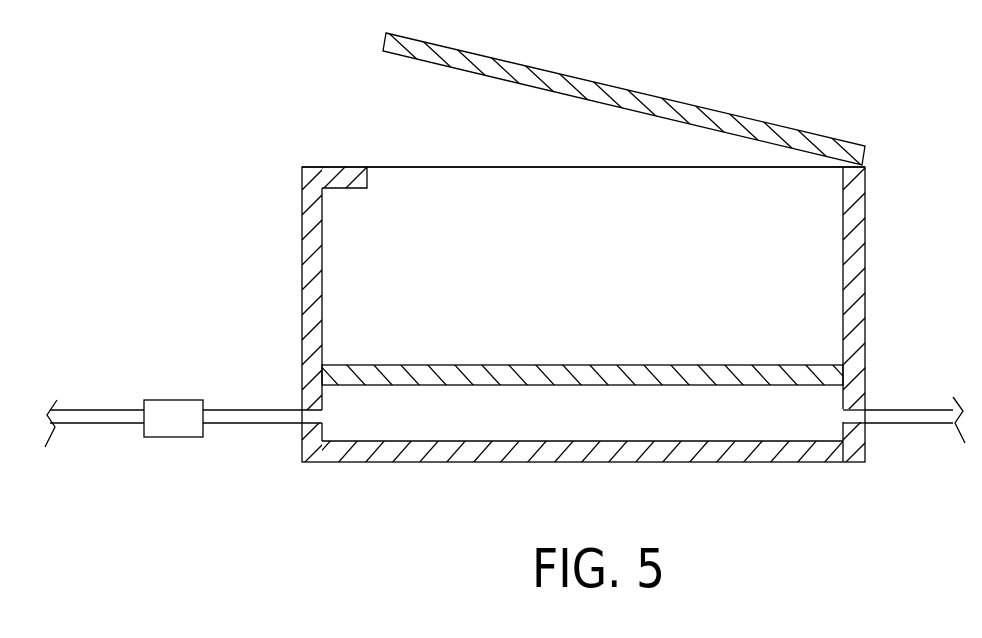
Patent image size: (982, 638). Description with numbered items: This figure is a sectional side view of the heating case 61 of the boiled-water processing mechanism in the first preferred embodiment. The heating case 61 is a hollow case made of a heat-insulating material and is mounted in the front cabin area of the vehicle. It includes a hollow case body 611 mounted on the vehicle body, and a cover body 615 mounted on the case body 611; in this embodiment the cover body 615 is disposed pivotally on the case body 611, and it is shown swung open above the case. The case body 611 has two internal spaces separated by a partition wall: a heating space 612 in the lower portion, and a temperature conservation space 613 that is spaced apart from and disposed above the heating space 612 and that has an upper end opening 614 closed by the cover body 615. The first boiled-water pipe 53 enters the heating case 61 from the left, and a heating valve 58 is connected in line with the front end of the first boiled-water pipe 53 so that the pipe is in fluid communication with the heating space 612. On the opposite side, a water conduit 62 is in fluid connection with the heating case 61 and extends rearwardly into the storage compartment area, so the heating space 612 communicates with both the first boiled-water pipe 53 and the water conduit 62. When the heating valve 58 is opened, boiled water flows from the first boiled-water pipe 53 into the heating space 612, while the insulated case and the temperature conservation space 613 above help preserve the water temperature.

The first boiled-water pipe 53 is at (252, 417).
The heating valve 58 is at (175, 410).
The heating case 61 is at (638, 97).
The case body 611 is at (852, 242).
The heating space 612 is at (743, 418).
The temperature conservation space 613 is at (803, 303).
The upper end opening 614 is at (572, 259).
The cover body 615 is at (683, 117).
The water conduit 62 is at (912, 418).